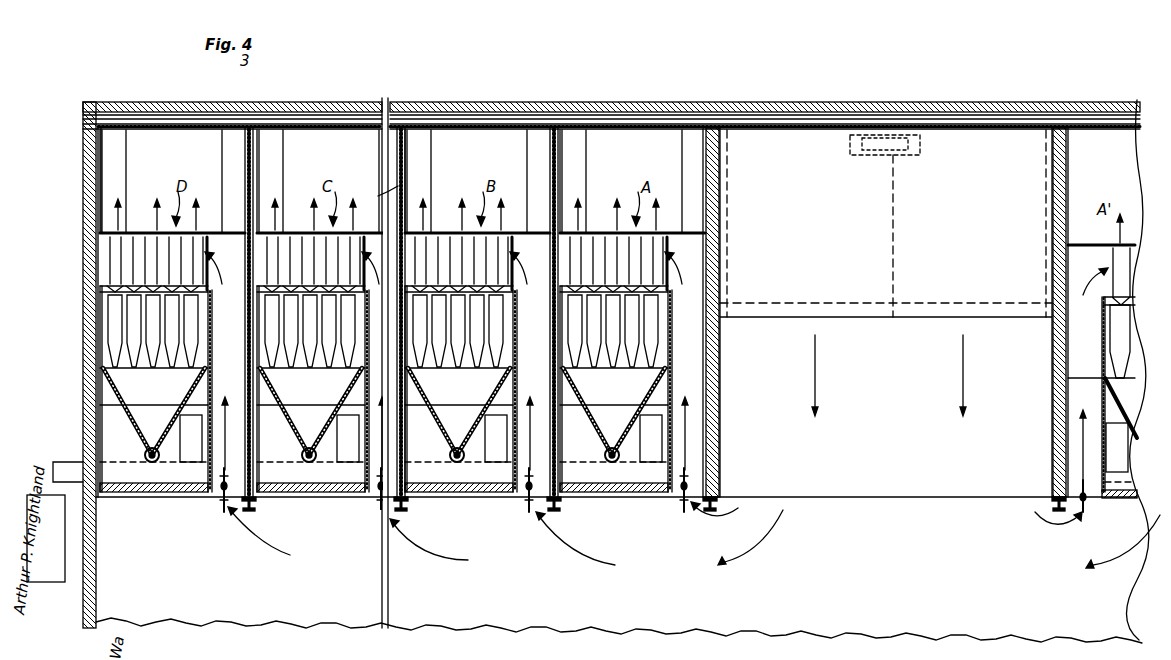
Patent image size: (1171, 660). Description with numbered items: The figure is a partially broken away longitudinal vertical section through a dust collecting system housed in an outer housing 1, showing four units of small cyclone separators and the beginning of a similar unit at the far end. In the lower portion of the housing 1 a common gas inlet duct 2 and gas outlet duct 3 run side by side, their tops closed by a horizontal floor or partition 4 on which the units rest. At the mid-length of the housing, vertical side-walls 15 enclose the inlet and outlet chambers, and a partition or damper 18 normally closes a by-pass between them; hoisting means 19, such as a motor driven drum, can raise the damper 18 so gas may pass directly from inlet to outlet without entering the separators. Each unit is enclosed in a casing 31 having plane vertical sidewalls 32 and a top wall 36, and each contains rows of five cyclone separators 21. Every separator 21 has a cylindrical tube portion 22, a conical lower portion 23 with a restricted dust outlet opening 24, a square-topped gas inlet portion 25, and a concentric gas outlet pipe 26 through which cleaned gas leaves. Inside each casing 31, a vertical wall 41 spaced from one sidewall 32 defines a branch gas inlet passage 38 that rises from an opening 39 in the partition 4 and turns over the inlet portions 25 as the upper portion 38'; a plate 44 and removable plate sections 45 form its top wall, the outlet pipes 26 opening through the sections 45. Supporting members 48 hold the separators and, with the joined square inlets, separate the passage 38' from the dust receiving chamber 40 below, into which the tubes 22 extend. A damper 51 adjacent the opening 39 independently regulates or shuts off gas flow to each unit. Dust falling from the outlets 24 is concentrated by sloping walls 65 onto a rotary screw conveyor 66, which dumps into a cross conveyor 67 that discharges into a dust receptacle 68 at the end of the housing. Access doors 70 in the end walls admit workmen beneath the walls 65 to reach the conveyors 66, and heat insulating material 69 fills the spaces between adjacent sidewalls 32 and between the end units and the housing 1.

The outer housing 1 is at (445, 104).
The gas inlet duct 2 is at (524, 592).
The gas outlet duct 3 is at (687, 128).
The horizontal floor or partition 4 is at (298, 490).
The vertical side-walls 15 is at (1053, 210).
The partition or damper 18 is at (898, 409).
The hoisting means 19 is at (878, 158).
The cyclone separator 21 is at (133, 318).
The tube portion 22 is at (195, 318).
The conical lower portion 23 is at (207, 331).
The dust outlet opening 24 is at (192, 352).
The gas inlet portion 25 is at (128, 297).
The gas outlet pipe 26 is at (130, 255).
The casing 31 is at (236, 436).
The vertical sidewalls 32 is at (100, 177).
The top wall 36 is at (330, 130).
The branch gas inlet passage 38 is at (598, 447).
The upper portion of inlet passage 38' is at (360, 248).
The branch gas outlet passage / opening 39 is at (190, 160).
The dust receiving chamber 40 is at (162, 400).
The vertical wall 41 is at (212, 366).
The plate 44 is at (232, 232).
The plate sections 45 is at (138, 232).
The supporting members 48 is at (100, 283).
The damper 51 is at (228, 497).
The sloping walls 65 is at (182, 410).
The rotary screw conveyor 66 is at (150, 463).
The cross conveyor 67 is at (64, 460).
The dust receptacle 68 is at (50, 582).
The heat insulating material 69 is at (720, 272).
The access door 70 is at (190, 455).